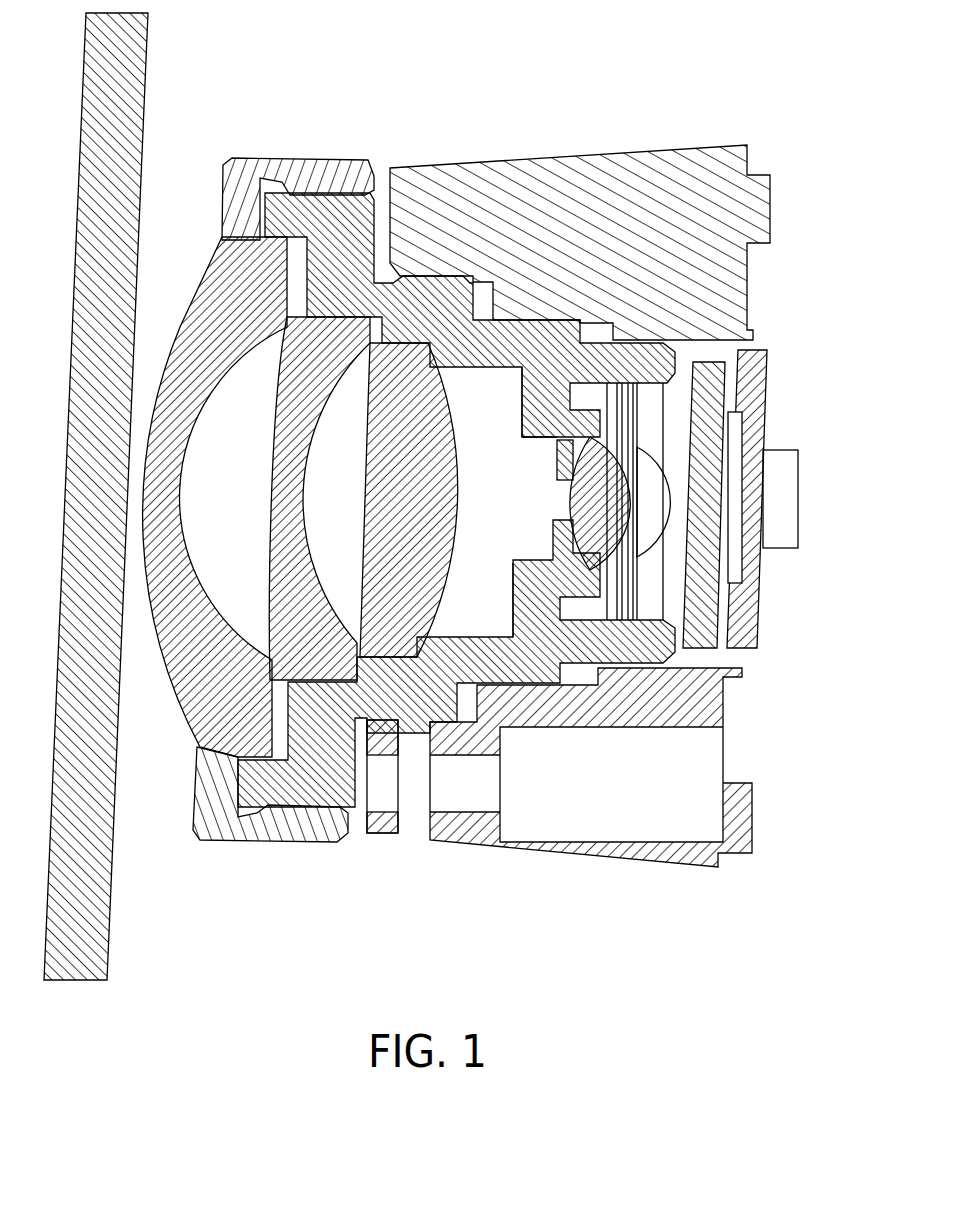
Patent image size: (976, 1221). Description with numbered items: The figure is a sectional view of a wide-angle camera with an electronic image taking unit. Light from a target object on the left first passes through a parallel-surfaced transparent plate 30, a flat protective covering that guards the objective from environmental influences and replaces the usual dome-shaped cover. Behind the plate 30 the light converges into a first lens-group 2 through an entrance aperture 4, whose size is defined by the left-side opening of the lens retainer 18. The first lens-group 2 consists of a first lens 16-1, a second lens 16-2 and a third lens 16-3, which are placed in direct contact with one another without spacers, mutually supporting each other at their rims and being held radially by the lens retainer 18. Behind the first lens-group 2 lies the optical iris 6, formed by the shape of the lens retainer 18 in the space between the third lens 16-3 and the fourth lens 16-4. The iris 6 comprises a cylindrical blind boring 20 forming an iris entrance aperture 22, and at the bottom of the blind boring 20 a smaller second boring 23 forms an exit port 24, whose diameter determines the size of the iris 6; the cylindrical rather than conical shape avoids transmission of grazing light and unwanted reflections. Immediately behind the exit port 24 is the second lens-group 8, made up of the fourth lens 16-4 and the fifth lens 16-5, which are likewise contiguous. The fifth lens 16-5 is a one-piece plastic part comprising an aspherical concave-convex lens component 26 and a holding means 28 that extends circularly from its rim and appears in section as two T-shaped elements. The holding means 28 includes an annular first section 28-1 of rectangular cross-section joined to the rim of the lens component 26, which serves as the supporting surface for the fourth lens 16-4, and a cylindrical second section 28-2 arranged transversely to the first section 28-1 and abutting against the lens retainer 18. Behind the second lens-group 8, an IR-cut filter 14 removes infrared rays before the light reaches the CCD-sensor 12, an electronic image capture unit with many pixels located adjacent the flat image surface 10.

The parallel-surfaced transparent plate 30 is at (133, 92).
The first lens-group 2 is at (438, 134).
The second lens-group 8 is at (702, 136).
The entrance aperture 4 is at (172, 300).
The first lens 16-1 is at (270, 302).
The second lens 16-2 is at (349, 360).
The third lens 16-3 is at (429, 410).
The fourth lens 16-4 is at (586, 440).
The fifth lens 16-5 is at (648, 492).
The lens retainer 18 is at (436, 328).
The exit port 24 is at (519, 462).
The optical iris 6 is at (546, 480).
The second boring 23 is at (560, 503).
The blind boring 20 is at (530, 512).
The entrance aperture of the iris 22 is at (509, 542).
The holding means 28 is at (724, 500).
The first section 28-1 is at (640, 402).
The second section 28-2 is at (628, 425).
The lens component 26 is at (637, 510).
The IR-cut filter 14 is at (717, 560).
The CCD-sensor 12 is at (762, 425).
The image surface 10 is at (738, 455).